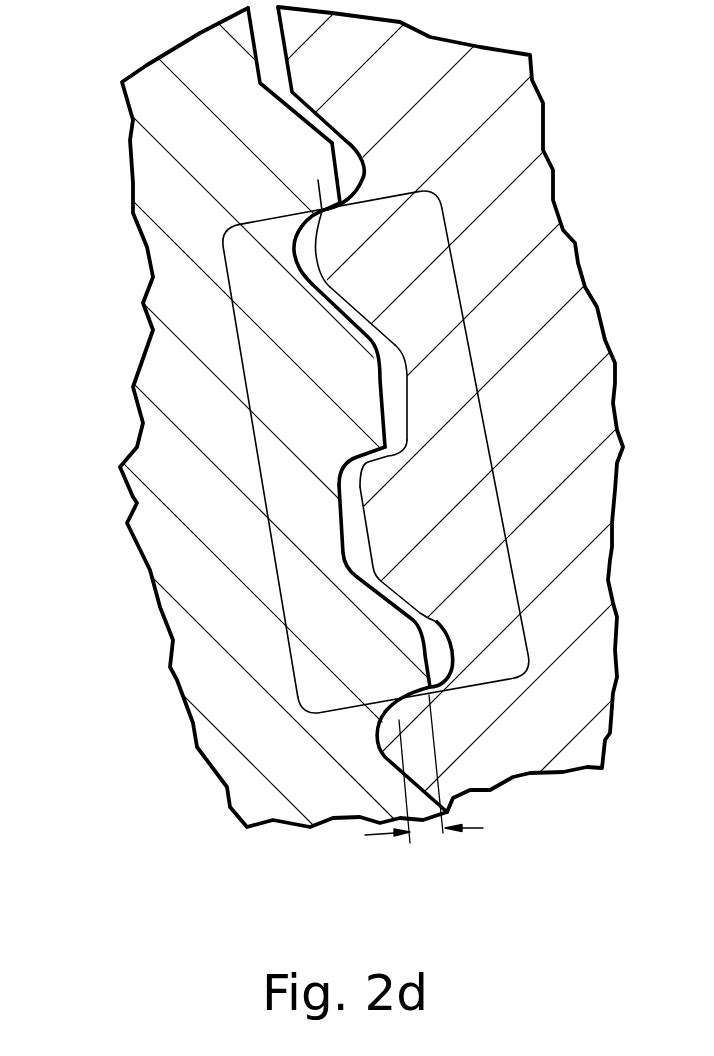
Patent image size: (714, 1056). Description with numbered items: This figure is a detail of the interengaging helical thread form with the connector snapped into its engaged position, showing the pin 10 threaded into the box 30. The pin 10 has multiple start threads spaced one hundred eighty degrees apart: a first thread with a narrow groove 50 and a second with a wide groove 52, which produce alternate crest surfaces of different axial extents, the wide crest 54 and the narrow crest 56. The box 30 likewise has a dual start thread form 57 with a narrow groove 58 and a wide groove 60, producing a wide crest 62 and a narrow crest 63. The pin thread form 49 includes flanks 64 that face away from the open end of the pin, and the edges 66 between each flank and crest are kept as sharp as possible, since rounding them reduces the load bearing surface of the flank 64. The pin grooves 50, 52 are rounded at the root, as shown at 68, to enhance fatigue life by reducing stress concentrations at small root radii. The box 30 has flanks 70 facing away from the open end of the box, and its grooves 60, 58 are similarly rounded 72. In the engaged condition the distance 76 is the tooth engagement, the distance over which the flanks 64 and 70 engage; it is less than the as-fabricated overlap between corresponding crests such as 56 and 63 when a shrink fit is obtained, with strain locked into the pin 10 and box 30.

The pin 10 is at (597, 383).
The box 30 is at (147, 500).
The pin thread form 49 is at (484, 422).
The narrow groove 50 is at (367, 167).
The wide groove 52 is at (408, 382).
The wide crest 54 is at (368, 530).
The narrow crest 56 is at (322, 253).
The dual start thread form 57 is at (260, 480).
The narrow groove 58 is at (291, 250).
The wide groove 60 is at (339, 530).
The wide crest 62 is at (378, 384).
The narrow crest 63 is at (423, 655).
The flank 64 is at (330, 207).
The edge 66 is at (312, 210).
The rounded root 68 is at (395, 343).
The flank 70 is at (322, 212).
The rounded root 72 is at (339, 475).
The tooth engagement 76 is at (439, 769).